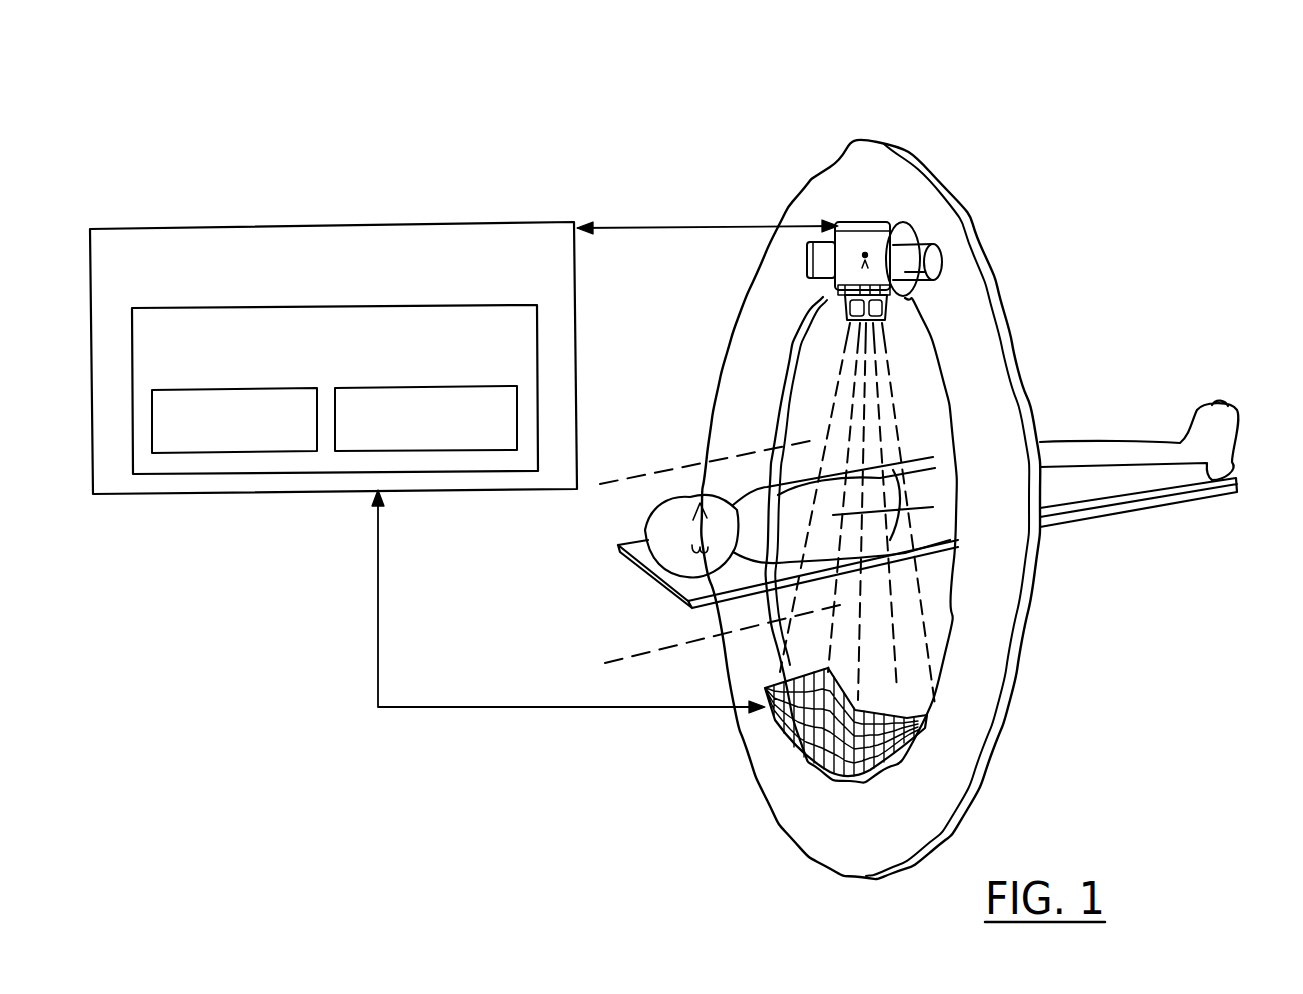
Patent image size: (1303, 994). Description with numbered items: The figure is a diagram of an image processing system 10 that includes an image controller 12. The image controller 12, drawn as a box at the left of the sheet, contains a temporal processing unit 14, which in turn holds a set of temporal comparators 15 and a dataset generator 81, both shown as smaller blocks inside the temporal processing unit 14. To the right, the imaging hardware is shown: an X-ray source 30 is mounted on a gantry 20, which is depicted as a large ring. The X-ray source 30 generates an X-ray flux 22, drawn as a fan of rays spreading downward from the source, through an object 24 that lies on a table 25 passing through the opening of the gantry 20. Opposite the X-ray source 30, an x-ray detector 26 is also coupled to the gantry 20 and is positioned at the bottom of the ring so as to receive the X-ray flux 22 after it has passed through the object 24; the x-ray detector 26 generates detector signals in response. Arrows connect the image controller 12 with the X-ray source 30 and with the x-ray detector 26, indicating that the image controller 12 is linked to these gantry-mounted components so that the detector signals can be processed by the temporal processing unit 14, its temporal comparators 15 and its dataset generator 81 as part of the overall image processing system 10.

The image processing system 10 is at (616, 66).
The image controller 12 is at (438, 224).
The temporal processing unit 14 is at (469, 306).
The dataset generator 81 is at (198, 390).
The temporal comparators 15 is at (497, 450).
The gantry 20 is at (818, 176).
The X-ray source 30 is at (892, 222).
The X-ray flux 22 is at (846, 356).
The object 24 is at (1073, 438).
The table 25 is at (1165, 500).
The x-ray detector 26 is at (864, 776).